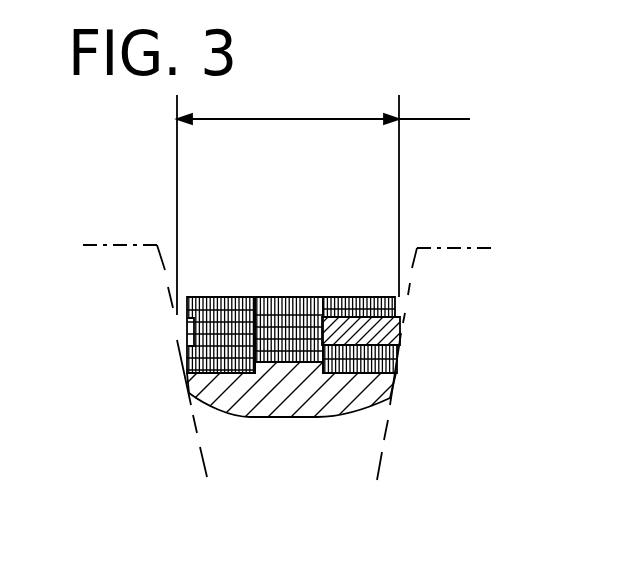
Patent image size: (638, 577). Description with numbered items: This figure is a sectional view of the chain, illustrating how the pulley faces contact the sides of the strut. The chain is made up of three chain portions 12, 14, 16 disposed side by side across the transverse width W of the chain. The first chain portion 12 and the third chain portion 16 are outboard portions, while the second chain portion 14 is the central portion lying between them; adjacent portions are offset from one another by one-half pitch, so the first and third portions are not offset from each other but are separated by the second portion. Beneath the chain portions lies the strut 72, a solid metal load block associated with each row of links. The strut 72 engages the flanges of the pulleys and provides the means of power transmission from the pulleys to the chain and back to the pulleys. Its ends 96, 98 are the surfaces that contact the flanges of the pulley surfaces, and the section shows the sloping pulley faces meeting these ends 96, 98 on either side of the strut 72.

The width of the chain W is at (306, 119).
The first chain portion 12 is at (210, 242).
The second chain portion 14 is at (283, 238).
The third chain portion 16 is at (357, 241).
The strut 72 is at (306, 397).
The strut end 96 is at (191, 396).
The strut end 98 is at (393, 387).